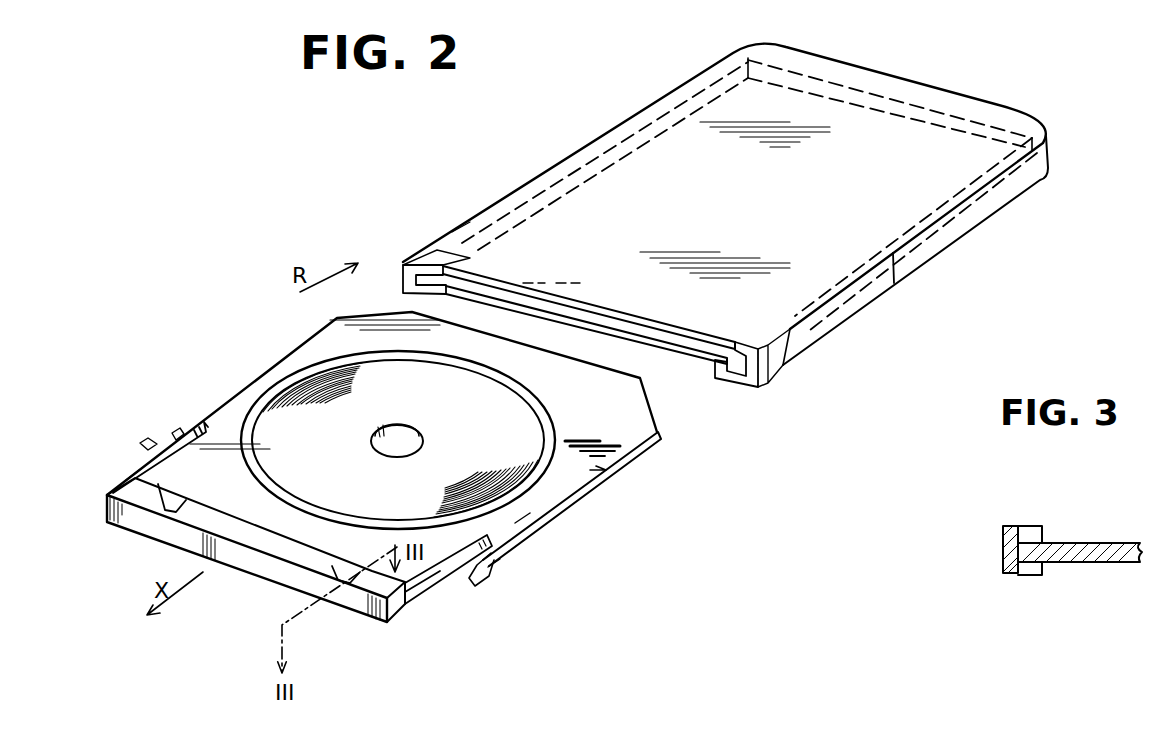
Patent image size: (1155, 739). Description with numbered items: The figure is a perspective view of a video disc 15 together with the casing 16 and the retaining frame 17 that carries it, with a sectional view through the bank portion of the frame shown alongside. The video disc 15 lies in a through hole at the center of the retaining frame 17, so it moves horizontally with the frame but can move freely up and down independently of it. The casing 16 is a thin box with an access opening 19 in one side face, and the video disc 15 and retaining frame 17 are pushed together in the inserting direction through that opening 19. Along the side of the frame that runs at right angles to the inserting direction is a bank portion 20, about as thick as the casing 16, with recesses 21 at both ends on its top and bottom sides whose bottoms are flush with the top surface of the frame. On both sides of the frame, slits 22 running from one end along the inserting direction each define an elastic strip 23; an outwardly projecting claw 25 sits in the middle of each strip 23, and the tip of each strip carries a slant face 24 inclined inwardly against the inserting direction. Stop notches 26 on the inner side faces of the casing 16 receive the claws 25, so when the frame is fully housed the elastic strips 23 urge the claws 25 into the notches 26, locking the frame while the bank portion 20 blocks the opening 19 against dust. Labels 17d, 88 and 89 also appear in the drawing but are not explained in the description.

In FIG. 2, the video disc 15 is at (292, 390).
In FIG. 2, the casing 16 is at (563, 203).
In FIG. 2, the retaining frame 17 is at (574, 512).
In FIG. 3, the retaining frame 17 is at (1075, 560).
In FIG. 2, the projection on side wall 17d is at (606, 470).
In FIG. 2, the access opening 19 is at (589, 312).
In FIG. 2, the bank portion 20 is at (243, 550).
In FIG. 3, the bank portion 20 is at (1008, 530).
In FIG. 2, the recess 21 is at (160, 513).
In FIG. 3, the recess 21 is at (1028, 528).
In FIG. 2, the slit 22 is at (176, 436).
In FIG. 2, the elastic strip 23 is at (134, 466).
In FIG. 2, the slant face 24 is at (115, 483).
In FIG. 2, the claw 25 is at (146, 443).
In FIG. 2, the stop notch 26 is at (462, 230).
In FIG. 2, the slider 88 is at (586, 302).
In FIG. 2, the stopper 89 is at (432, 262).